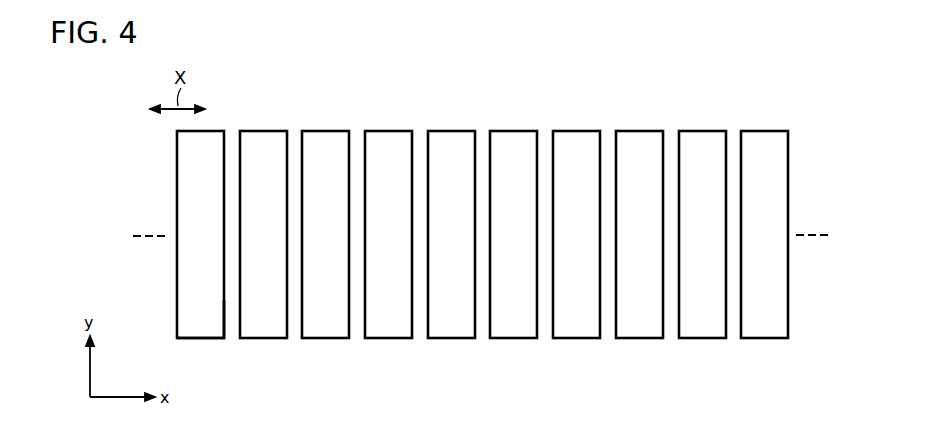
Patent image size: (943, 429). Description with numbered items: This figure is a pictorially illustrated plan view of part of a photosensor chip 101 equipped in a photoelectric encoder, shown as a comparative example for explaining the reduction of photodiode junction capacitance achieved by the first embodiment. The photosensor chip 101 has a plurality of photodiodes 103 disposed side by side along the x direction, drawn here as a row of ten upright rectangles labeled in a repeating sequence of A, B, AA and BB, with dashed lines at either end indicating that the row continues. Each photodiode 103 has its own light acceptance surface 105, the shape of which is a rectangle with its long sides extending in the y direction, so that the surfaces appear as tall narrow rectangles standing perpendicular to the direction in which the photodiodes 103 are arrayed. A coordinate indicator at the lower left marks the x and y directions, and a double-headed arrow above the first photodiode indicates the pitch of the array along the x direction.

The photosensor chip 101 is at (488, 232).
The photodiode 103 is at (216, 340).
The light acceptance surface 105 is at (195, 334).